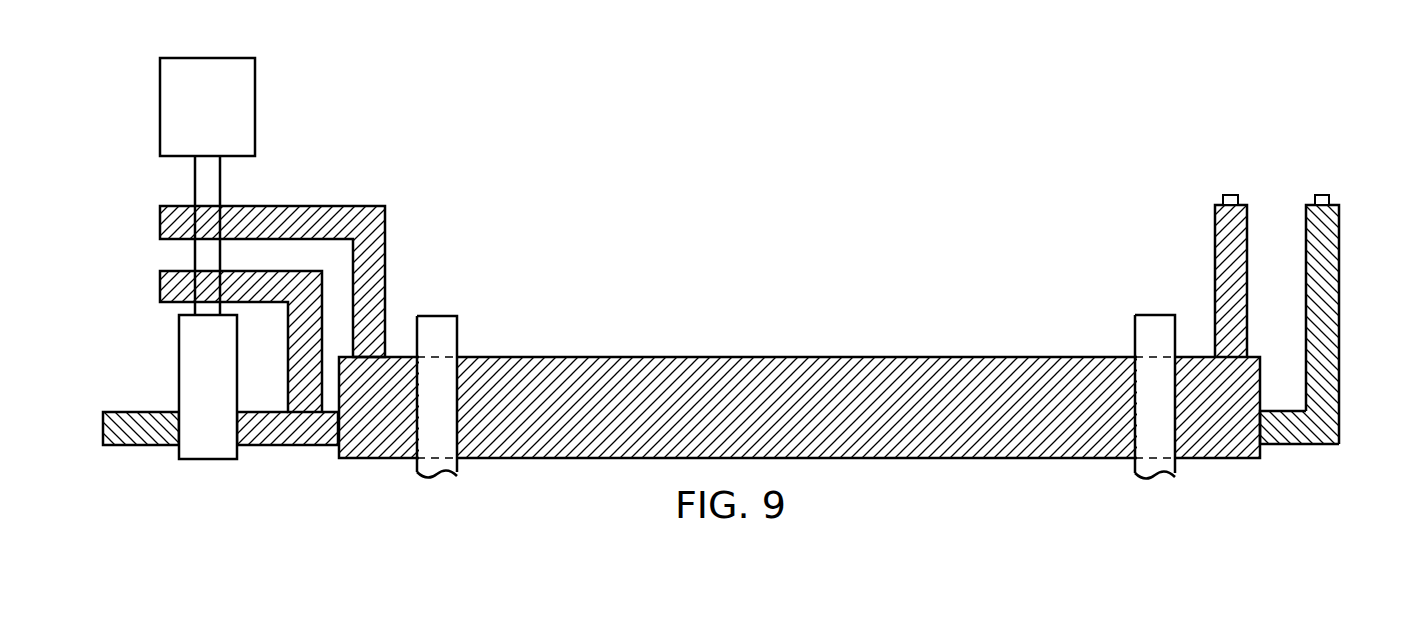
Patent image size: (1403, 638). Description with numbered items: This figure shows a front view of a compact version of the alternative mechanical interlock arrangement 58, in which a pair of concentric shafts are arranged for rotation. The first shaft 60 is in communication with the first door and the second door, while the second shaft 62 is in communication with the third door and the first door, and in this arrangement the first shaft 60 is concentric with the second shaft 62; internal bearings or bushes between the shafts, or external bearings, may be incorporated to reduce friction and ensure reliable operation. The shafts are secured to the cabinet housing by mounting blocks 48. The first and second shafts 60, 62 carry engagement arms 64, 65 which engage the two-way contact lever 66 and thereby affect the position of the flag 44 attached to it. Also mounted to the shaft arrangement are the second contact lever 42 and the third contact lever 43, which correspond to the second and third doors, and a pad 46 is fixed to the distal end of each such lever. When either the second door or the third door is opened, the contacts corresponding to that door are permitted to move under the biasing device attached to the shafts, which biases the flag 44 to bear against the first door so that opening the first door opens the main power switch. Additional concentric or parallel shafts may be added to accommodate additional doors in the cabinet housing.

The second contact lever 42 is at (1247, 228).
The third contact lever 43 is at (1340, 228).
The flag 44 is at (257, 88).
The pad 46 is at (1322, 195).
The mounting blocks 48 is at (440, 316).
The alternative mechanical interlock arrangement 58 is at (828, 166).
The first shaft 60 is at (560, 357).
The second shaft 62 is at (285, 445).
The engagement arm 64 is at (386, 222).
The engagement arm 65 is at (159, 288).
The two-way contact lever 66 is at (222, 176).